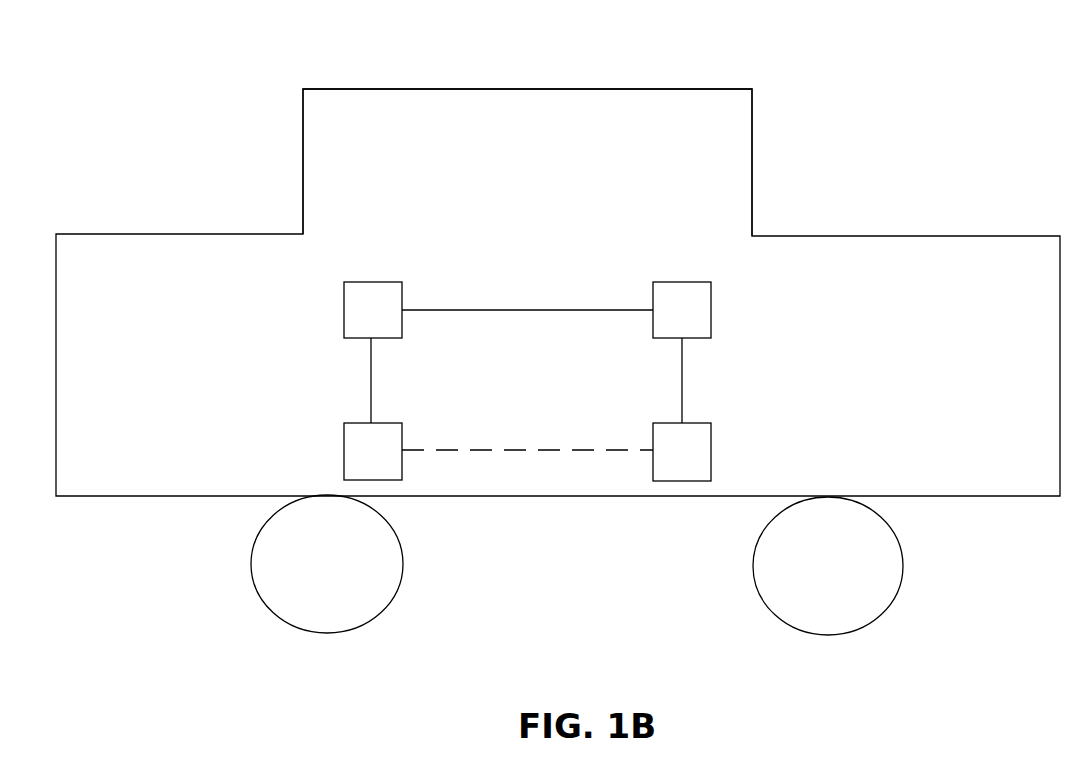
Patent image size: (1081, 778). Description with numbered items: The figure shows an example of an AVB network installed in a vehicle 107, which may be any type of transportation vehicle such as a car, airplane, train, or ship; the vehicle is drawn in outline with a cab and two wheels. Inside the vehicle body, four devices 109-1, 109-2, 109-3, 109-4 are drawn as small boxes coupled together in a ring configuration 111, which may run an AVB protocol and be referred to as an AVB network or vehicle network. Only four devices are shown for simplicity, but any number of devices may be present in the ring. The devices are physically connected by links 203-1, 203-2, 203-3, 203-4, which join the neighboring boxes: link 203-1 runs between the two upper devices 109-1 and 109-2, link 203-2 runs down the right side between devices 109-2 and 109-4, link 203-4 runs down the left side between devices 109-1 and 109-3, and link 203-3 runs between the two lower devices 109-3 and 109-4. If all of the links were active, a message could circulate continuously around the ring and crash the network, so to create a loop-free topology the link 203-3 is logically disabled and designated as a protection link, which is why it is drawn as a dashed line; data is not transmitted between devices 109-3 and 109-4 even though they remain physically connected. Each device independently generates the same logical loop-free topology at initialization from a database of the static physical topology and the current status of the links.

The vehicle 107 is at (365, 87).
The ring configuration 111 is at (544, 212).
The device 109-1 is at (344, 310).
The device 109-2 is at (711, 310).
The device 109-3 is at (344, 452).
The device 109-4 is at (711, 453).
The link 203-1 is at (536, 311).
The link 203-2 is at (682, 362).
The link 203-3 is at (522, 451).
The link 203-4 is at (371, 366).